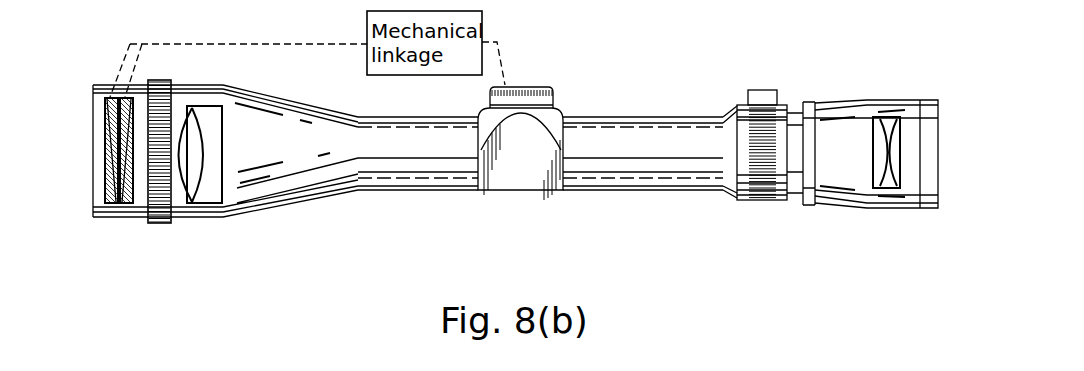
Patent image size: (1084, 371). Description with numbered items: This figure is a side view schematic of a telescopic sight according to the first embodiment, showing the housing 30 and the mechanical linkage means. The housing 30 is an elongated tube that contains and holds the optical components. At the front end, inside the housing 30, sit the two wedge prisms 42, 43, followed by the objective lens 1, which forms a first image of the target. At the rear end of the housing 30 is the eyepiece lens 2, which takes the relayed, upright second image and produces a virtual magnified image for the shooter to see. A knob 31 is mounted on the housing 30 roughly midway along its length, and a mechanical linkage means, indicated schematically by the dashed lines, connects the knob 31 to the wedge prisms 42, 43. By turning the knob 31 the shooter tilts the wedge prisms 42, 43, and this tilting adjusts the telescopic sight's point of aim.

The objective lens 1 is at (203, 203).
The eyepiece lens 2 is at (887, 188).
The housing 30 is at (615, 117).
The knob 31 is at (533, 87).
The wedge prism 42 is at (113, 203).
The wedge prism 43 is at (127, 203).